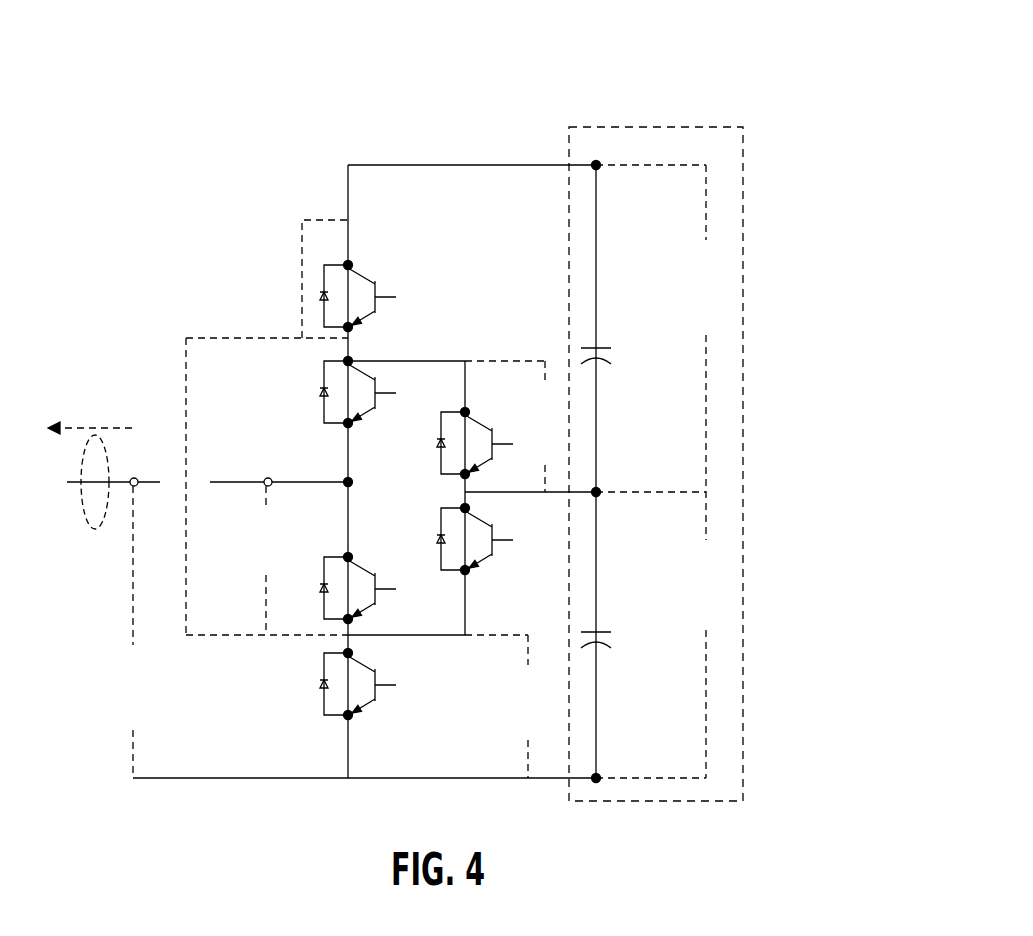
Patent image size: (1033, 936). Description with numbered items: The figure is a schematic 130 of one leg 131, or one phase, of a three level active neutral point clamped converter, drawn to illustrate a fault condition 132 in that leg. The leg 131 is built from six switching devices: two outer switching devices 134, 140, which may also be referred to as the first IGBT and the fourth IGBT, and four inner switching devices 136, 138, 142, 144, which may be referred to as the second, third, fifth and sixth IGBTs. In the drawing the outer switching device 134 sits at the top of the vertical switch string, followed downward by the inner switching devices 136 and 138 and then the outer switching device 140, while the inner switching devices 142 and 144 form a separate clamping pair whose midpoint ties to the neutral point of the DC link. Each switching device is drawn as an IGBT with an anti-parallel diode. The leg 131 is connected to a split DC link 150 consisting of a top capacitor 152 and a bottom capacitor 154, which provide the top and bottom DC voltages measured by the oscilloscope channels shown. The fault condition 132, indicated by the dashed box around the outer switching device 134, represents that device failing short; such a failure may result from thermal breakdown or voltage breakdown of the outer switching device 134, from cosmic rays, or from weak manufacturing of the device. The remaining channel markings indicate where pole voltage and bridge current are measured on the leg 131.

The schematic 130 is at (797, 134).
The leg 131 is at (395, 429).
The fault condition 132 is at (302, 270).
The outer switching device 134 is at (379, 284).
The inner switching device 136 is at (382, 386).
The inner switching device 138 is at (378, 578).
The outer switching device 140 is at (378, 674).
The inner switching device 142 is at (493, 432).
The inner switching device 144 is at (497, 536).
The split DC link 150 is at (640, 126).
The top capacitor 152 is at (602, 346).
The bottom capacitor 154 is at (602, 630).